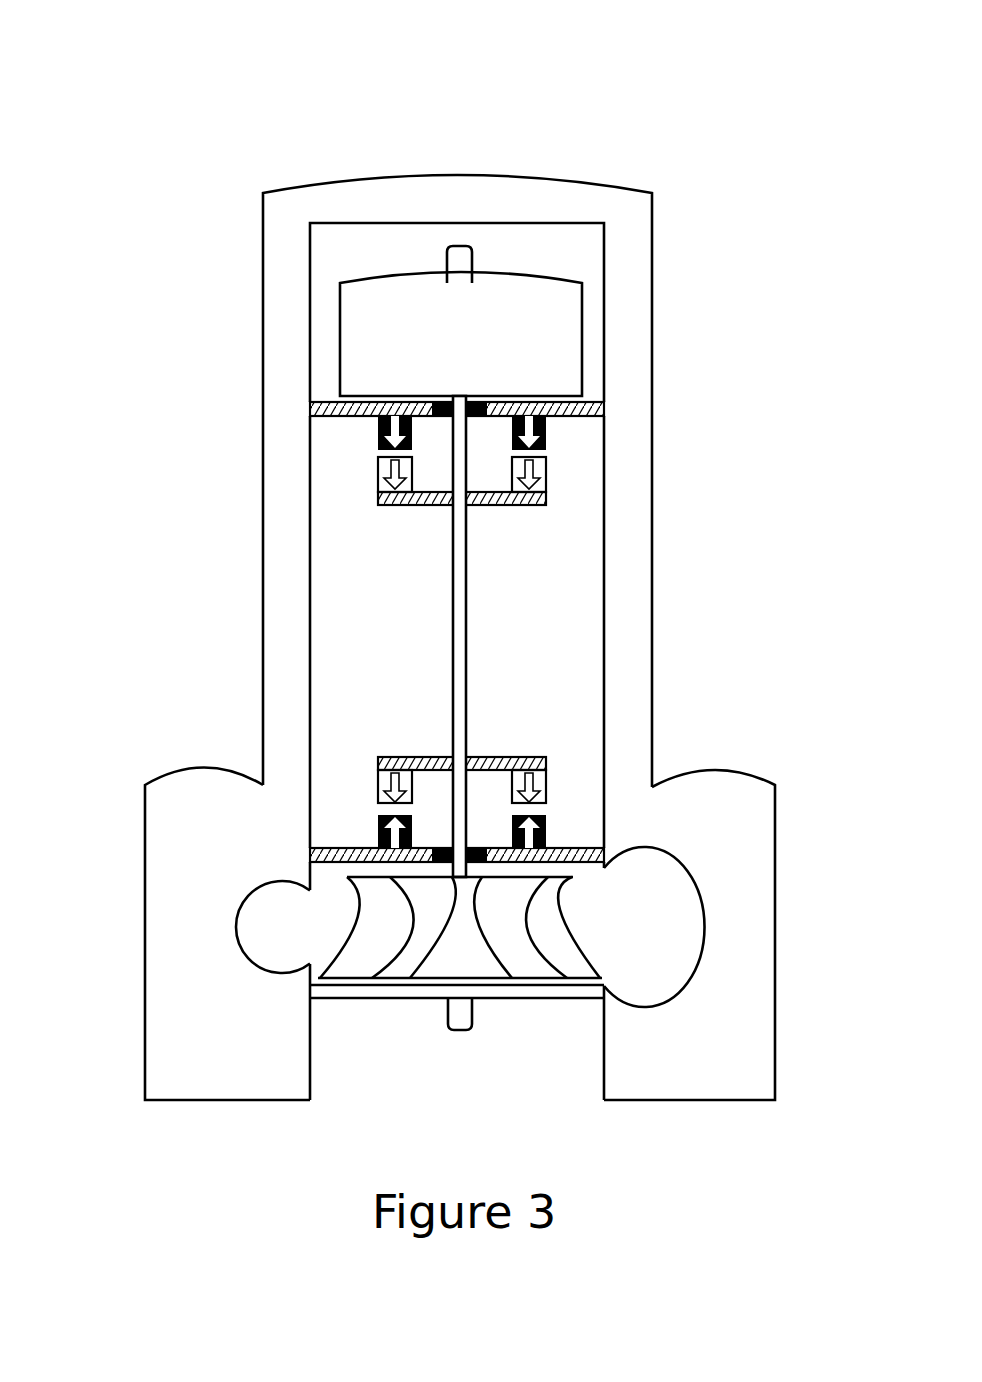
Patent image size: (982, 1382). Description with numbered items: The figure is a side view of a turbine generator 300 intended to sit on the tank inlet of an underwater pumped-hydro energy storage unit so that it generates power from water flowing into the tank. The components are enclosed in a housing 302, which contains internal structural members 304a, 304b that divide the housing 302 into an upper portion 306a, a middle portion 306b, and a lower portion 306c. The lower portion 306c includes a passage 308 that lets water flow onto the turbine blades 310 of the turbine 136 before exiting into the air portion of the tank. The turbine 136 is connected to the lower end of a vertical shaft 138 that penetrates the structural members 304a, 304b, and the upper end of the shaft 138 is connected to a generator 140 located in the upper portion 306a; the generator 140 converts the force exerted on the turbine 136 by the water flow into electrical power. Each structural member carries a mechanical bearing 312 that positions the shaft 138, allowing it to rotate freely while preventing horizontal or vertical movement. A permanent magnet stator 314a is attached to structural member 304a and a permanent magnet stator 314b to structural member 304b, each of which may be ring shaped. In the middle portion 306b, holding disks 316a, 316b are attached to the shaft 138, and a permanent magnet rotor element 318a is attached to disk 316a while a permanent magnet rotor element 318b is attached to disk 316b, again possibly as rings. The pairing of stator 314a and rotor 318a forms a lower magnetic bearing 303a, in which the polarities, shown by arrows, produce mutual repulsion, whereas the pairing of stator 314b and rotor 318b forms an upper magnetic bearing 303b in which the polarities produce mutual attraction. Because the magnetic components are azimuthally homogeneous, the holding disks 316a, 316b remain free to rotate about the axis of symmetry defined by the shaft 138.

The turbine generator 300 is at (87, 30).
The housing 302 is at (512, 637).
The lower magnetic bearing 303a is at (201, 391).
The upper magnetic bearing 303b is at (251, 729).
The internal structural member 304a is at (538, 353).
The internal structural member 304b is at (589, 816).
The upper portion 306a is at (345, 254).
The middle portion 306b is at (345, 626).
The lower portion 306c is at (341, 925).
The passage 308 is at (283, 912).
The turbine blades 310 is at (483, 927).
The mechanical bearing 312 is at (334, 699).
The permanent magnet stator 314a is at (599, 501).
The permanent magnet stator 314b is at (313, 778).
The holding disk 316a is at (575, 577).
The holding disk 316b is at (342, 684).
The permanent magnet rotor element 318a is at (599, 543).
The permanent magnet rotor element 318b is at (599, 733).
The turbine 136 is at (531, 1030).
The vertical shaft 138 is at (315, 636).
The generator 140 is at (534, 318).